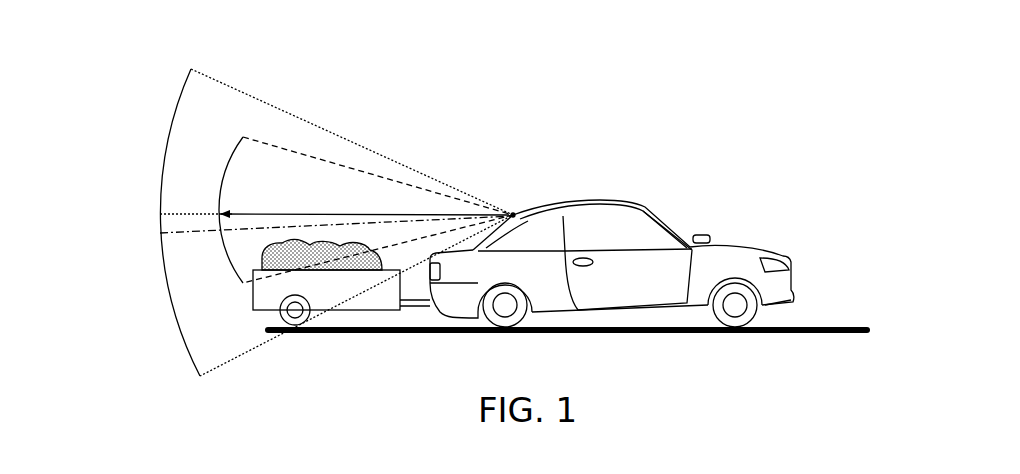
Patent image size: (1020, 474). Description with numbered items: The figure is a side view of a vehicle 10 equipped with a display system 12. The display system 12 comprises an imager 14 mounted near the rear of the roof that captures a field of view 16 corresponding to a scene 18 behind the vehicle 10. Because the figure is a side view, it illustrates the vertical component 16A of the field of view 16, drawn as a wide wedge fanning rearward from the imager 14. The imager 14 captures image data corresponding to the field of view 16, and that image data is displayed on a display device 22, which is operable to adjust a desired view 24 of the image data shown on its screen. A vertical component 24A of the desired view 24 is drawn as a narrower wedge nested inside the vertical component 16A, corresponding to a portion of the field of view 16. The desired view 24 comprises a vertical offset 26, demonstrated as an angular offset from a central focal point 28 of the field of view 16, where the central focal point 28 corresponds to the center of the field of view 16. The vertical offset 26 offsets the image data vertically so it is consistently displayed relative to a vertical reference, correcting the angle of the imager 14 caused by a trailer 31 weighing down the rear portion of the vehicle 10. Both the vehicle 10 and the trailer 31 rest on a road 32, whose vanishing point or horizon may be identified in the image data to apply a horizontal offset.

The vehicle 10 is at (523, 198).
The display system 12 is at (612, 227).
The imager 14 is at (515, 216).
The field of view 16 is at (298, 222).
The vertical component 16A is at (178, 322).
The scene 18 is at (32, 94).
The display device 22 is at (637, 210).
The desired view 24 is at (305, 177).
The vertical component 24A is at (232, 144).
The vertical offset 26 is at (348, 213).
The central focal point 28 is at (192, 232).
The trailer 31 is at (370, 302).
The road 32 is at (812, 319).